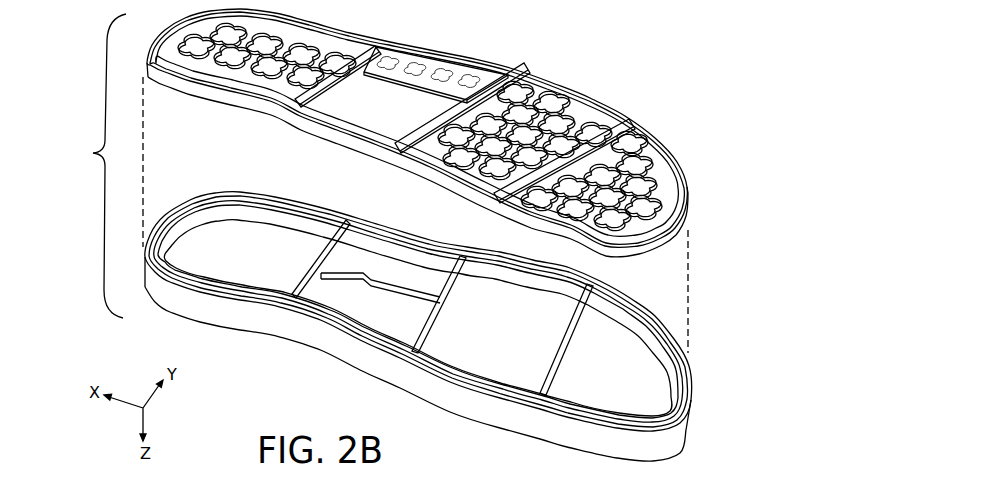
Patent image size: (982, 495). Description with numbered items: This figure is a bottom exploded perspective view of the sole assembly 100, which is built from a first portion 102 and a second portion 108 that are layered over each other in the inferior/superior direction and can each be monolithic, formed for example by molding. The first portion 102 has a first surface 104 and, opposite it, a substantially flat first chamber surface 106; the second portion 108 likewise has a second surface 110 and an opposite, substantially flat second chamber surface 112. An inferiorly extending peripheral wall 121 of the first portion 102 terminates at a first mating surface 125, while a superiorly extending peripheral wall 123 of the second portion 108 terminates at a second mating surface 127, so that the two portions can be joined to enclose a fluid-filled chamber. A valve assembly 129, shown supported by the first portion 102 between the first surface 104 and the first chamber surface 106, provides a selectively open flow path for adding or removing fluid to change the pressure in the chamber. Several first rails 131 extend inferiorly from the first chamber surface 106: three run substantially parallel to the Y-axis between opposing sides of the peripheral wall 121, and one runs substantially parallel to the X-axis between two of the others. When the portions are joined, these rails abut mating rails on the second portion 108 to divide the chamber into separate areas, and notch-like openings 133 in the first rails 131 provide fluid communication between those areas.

The sole assembly 100 is at (370, 183).
The first portion 102 is at (697, 426).
The first surface 104 is at (330, 362).
The first chamber surface 106 is at (524, 336).
The second portion 108 is at (697, 188).
The second surface 110 is at (400, 117).
The second chamber surface 112 is at (335, 142).
The peripheral wall 121 is at (565, 430).
The peripheral wall 123 is at (292, 124).
The first mating surface 125 is at (222, 285).
The second mating surface 127 is at (236, 112).
The valve assembly 129 is at (346, 222).
The first rails 131 is at (452, 290).
The opening 133 is at (420, 318).